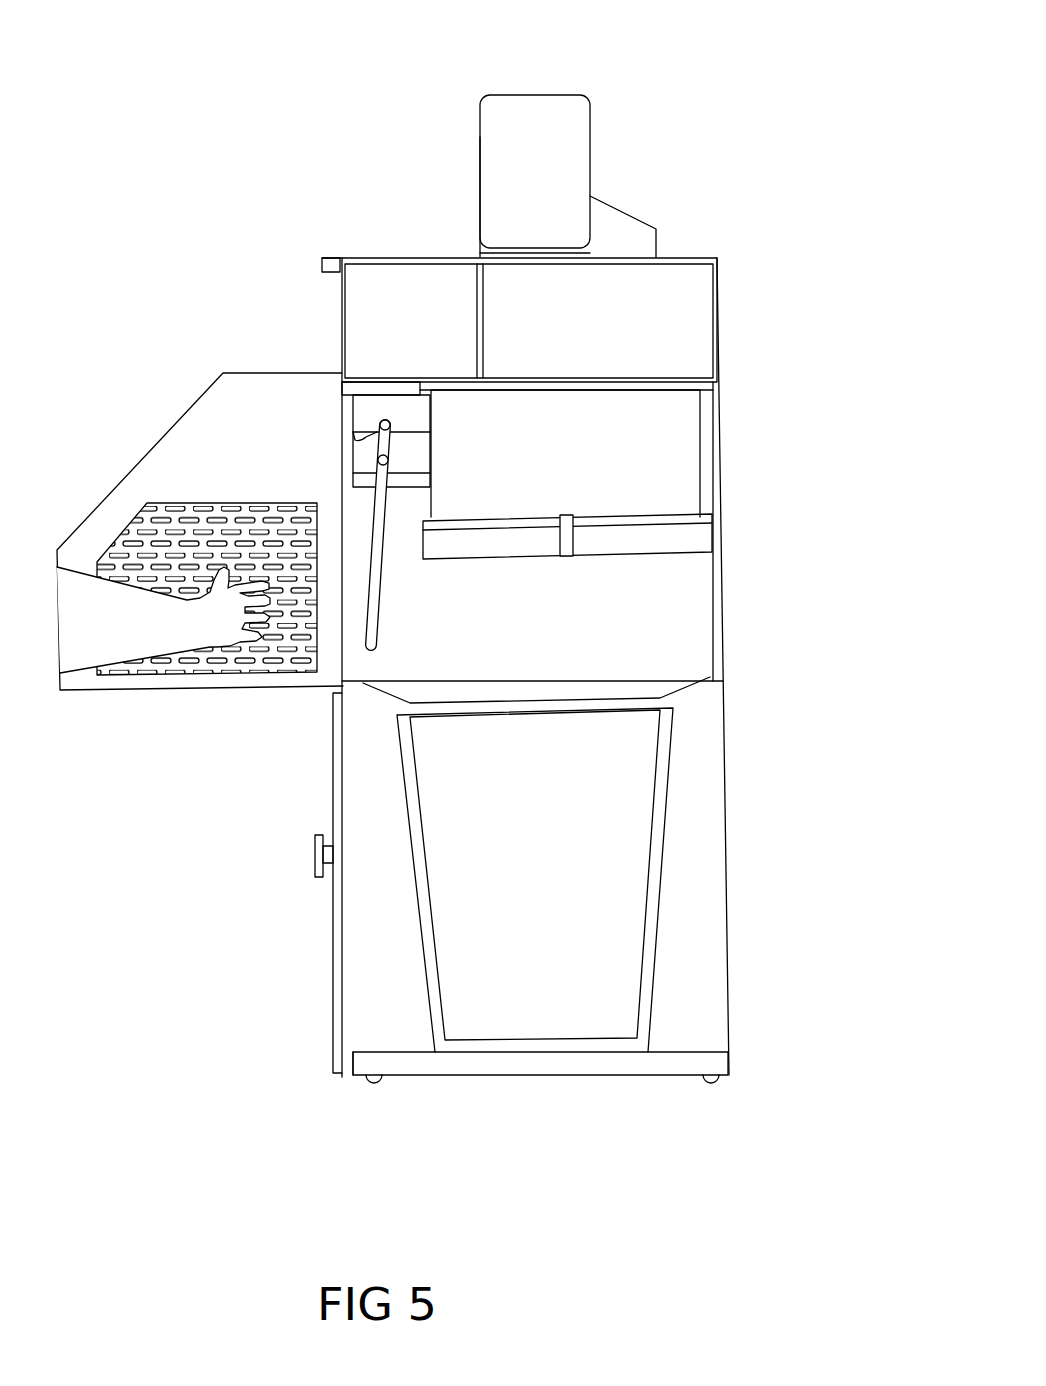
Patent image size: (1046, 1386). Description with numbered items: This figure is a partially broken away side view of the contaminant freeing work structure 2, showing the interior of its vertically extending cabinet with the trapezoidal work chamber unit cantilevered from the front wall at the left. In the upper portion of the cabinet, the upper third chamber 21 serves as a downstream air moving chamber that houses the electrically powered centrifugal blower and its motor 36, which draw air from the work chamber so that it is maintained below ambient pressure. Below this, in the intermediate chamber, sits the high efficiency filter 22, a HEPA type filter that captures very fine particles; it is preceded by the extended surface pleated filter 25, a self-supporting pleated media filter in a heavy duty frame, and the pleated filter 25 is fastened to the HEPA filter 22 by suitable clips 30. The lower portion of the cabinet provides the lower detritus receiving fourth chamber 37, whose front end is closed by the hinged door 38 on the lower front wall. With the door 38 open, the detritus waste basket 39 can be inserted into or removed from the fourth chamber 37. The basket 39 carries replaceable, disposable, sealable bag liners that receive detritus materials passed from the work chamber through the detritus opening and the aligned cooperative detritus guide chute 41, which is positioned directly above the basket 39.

The contaminant freeing work structure 2 is at (803, 330).
The upper third chamber 21 is at (697, 270).
The high efficiency filter 22 is at (598, 466).
The extended surface pleated filter 25 is at (628, 542).
The clips 30 is at (568, 556).
The motor 36 is at (542, 112).
The lower detritus receiving fourth chamber 37 is at (720, 988).
The hinged door 38 is at (342, 957).
The detritus waste basket 39 is at (673, 868).
The detritus guide chute 41 is at (697, 688).